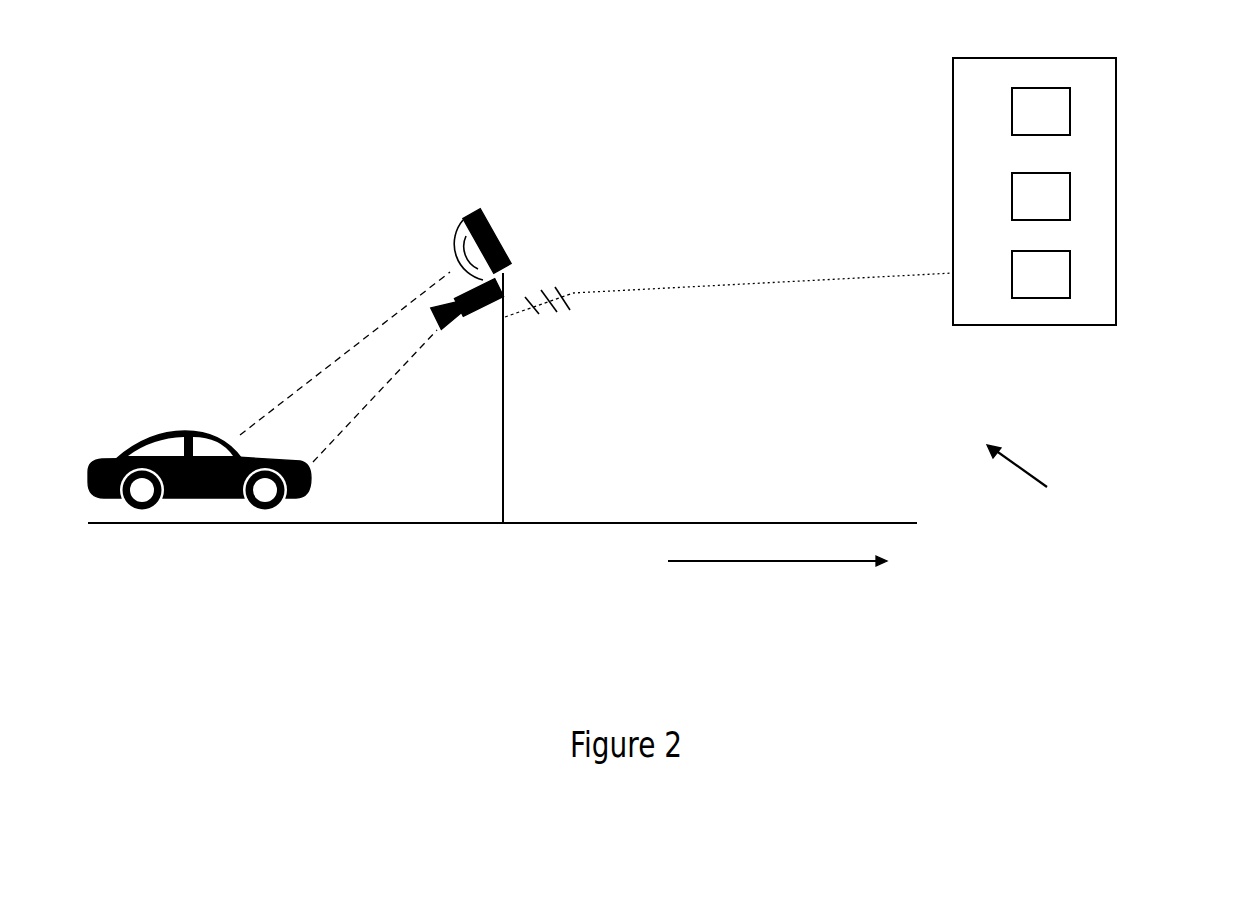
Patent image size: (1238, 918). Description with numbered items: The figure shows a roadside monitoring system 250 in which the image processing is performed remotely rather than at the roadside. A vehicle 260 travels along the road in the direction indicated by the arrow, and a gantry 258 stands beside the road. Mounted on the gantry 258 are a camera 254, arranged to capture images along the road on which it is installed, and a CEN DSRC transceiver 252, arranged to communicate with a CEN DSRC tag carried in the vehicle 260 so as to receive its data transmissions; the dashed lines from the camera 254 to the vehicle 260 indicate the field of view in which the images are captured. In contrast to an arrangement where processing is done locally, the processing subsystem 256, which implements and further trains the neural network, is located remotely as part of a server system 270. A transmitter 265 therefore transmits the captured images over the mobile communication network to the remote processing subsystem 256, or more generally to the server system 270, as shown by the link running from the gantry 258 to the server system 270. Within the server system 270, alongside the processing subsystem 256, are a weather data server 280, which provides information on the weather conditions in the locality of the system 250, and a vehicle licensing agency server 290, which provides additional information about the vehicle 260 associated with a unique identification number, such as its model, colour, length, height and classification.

The system 250 is at (1050, 490).
The CEN DSRC transceiver 252 is at (494, 228).
The camera 254 is at (457, 300).
The processing subsystem 256 is at (1012, 106).
The gantry 258 is at (507, 425).
The vehicle 260 is at (208, 500).
The transmitter 265 is at (559, 291).
The server system 270 is at (1117, 189).
The weather data server 280 is at (1012, 197).
The vehicle licensing agency server 290 is at (1063, 275).